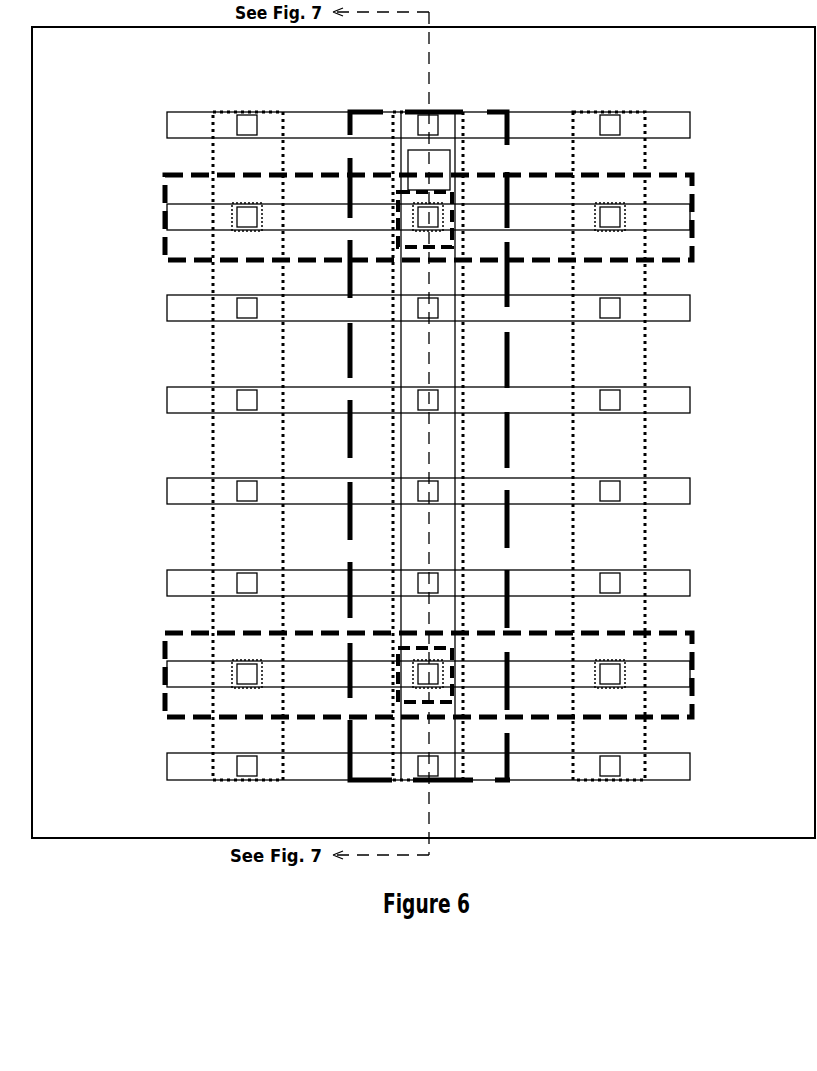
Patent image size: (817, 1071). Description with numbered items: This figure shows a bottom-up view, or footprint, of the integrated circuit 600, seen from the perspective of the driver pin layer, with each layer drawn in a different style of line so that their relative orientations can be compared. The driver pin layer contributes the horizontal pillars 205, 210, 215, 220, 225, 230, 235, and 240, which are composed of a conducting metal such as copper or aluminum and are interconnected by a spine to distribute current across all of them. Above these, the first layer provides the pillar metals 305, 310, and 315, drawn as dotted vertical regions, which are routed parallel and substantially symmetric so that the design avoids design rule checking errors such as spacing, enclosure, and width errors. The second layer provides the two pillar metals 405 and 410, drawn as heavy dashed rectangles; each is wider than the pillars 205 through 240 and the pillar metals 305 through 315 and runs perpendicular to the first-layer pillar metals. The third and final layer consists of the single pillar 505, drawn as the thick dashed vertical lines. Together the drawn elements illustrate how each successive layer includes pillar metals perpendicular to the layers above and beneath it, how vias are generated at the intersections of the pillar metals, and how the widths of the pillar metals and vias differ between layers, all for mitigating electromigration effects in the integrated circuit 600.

The pillar 205 is at (167, 125).
The pillar 210 is at (167, 217).
The pillar 215 is at (167, 308).
The pillar 220 is at (167, 400).
The pillar 225 is at (167, 491).
The pillar 230 is at (167, 583).
The pillar 235 is at (167, 674).
The pillar 240 is at (167, 766).
The pillar metal 305 is at (285, 465).
The pillar metal 310 is at (465, 463).
The pillar metal 315 is at (647, 463).
The pillar metal 405 is at (692, 217).
The pillar metal 410 is at (692, 675).
The pillar 505 is at (500, 112).
The integrated circuit 600 is at (525, 62).